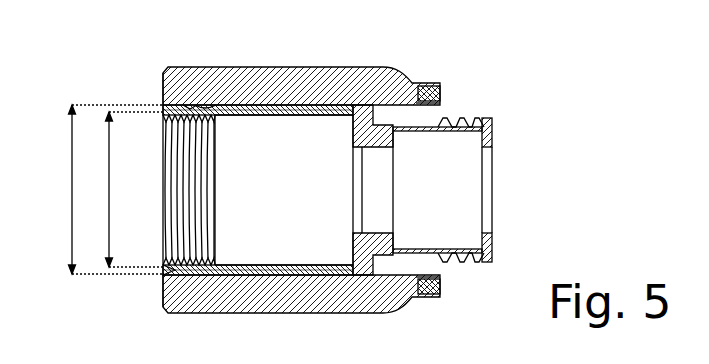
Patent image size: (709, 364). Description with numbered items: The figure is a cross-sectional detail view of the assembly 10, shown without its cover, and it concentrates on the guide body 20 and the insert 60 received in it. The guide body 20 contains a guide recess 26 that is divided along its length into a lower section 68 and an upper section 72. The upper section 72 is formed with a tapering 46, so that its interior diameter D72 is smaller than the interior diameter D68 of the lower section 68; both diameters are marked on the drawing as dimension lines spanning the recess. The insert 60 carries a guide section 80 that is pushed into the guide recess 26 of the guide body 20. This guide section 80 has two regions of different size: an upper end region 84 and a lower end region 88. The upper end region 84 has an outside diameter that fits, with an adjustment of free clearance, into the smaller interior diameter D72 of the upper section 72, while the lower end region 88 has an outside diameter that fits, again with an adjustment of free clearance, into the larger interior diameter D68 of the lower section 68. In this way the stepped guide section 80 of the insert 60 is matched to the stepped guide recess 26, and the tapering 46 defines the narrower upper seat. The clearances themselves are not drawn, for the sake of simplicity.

The hose coupling assembly 10 is at (124, 59).
The guide body 20 is at (388, 56).
The guide recess 26 is at (403, 265).
The tapering 46 is at (163, 233).
The insert 60 is at (450, 96).
The lower section 68 is at (297, 95).
The upper section 72 is at (200, 98).
The guide section 80 is at (173, 268).
The upper end region 84 is at (185, 95).
The lower end region 88 is at (324, 96).
The interior diameter of the lower section D68 is at (103, 189).
The interior diameter of the upper section D72 is at (122, 189).